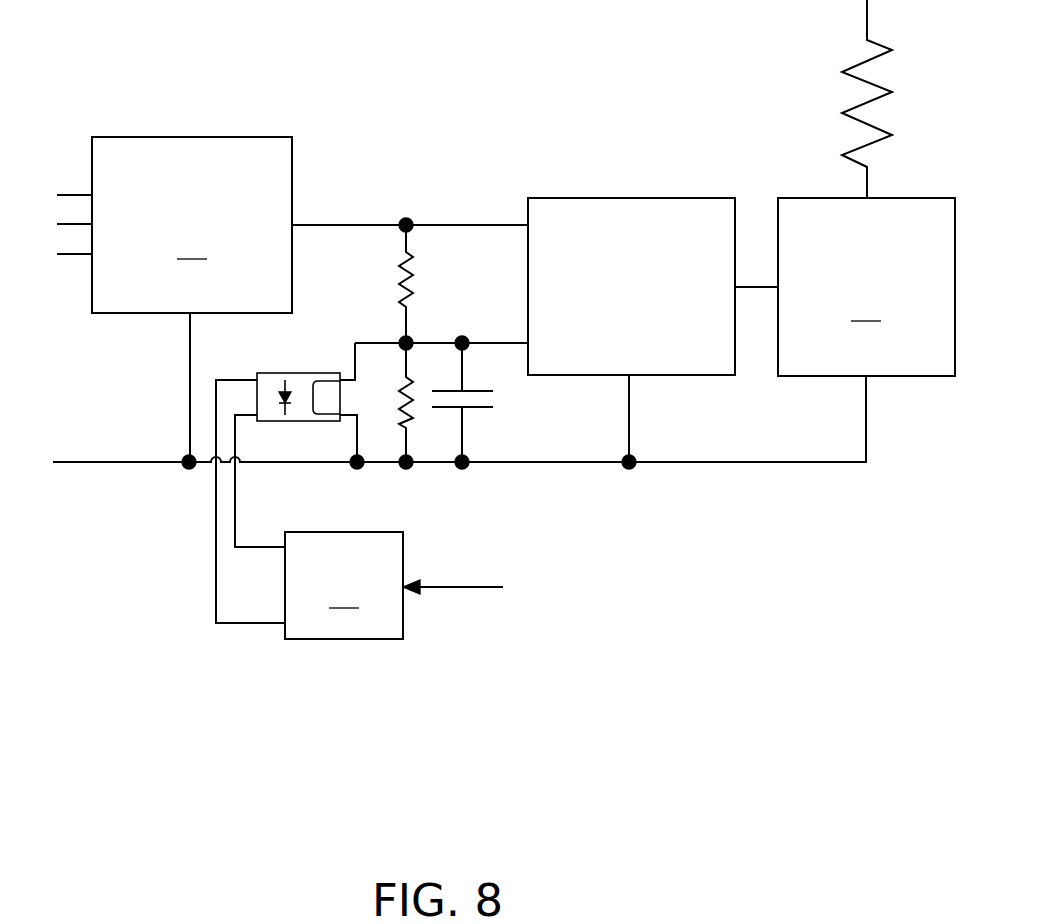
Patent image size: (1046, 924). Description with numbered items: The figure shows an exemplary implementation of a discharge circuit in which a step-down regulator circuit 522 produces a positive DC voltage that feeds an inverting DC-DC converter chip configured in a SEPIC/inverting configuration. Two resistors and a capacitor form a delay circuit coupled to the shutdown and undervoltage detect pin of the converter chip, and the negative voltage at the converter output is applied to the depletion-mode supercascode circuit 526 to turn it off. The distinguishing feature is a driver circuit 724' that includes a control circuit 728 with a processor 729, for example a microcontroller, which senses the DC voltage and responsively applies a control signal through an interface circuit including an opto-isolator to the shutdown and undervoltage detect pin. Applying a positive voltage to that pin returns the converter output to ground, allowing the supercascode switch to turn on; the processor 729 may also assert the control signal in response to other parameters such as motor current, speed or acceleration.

The step-down regulator circuit 522 is at (192, 137).
The driver circuit 724' is at (472, 234).
The depletion-mode supercascode circuit 526 is at (866, 287).
The control circuit 728 is at (163, 574).
The processor 729 is at (419, 585).